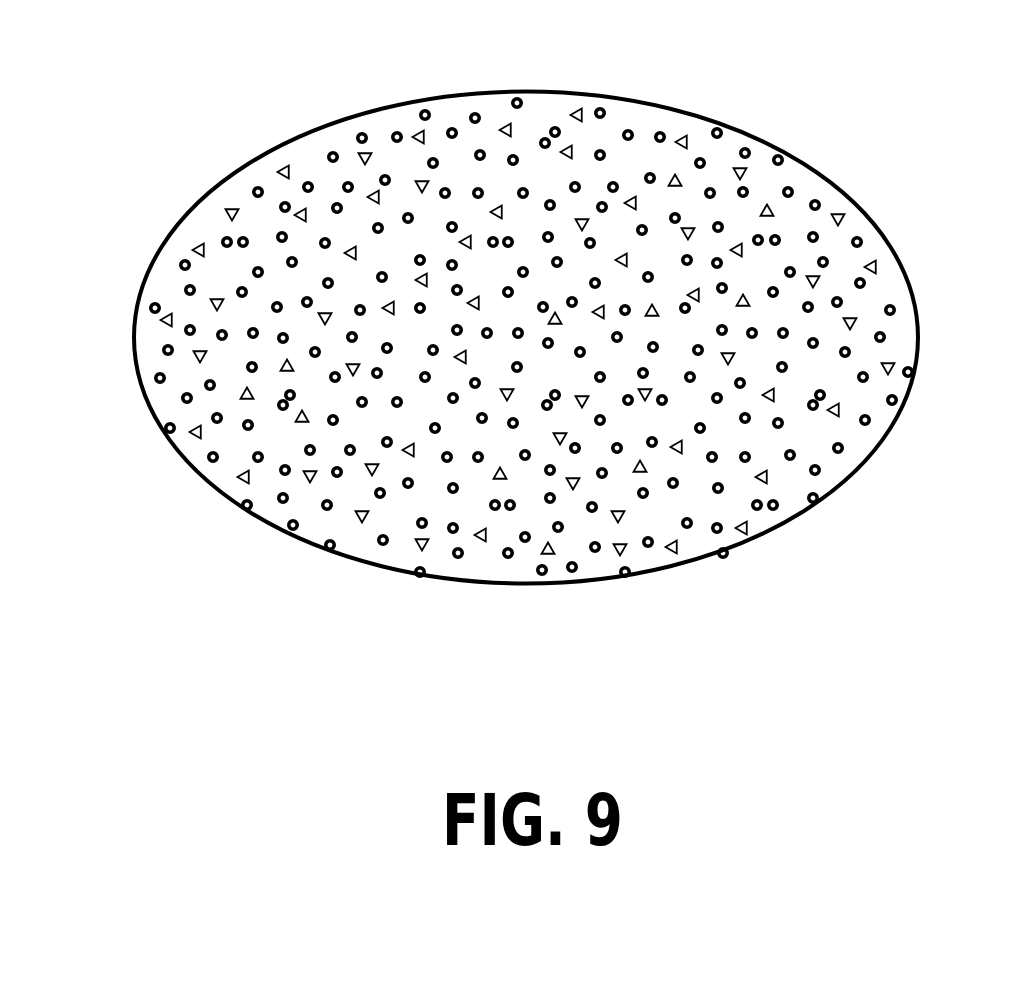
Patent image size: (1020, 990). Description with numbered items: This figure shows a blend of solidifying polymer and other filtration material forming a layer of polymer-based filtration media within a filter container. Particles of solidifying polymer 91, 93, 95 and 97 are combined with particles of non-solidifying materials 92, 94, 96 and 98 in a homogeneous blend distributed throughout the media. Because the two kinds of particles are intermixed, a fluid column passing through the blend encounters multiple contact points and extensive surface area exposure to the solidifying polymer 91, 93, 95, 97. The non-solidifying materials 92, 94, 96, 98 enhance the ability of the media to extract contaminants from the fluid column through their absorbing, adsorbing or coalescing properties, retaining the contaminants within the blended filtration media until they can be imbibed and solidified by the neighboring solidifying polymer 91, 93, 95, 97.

The solidifying polymer 91 is at (630, 132).
The non-solidifying material 92 is at (284, 168).
The solidifying polymer 93 is at (474, 116).
The non-solidifying material 94 is at (165, 315).
The solidifying polymer 95 is at (208, 460).
The non-solidifying material 96 is at (547, 544).
The solidifying polymer 97 is at (650, 544).
The non-solidifying material 98 is at (748, 526).